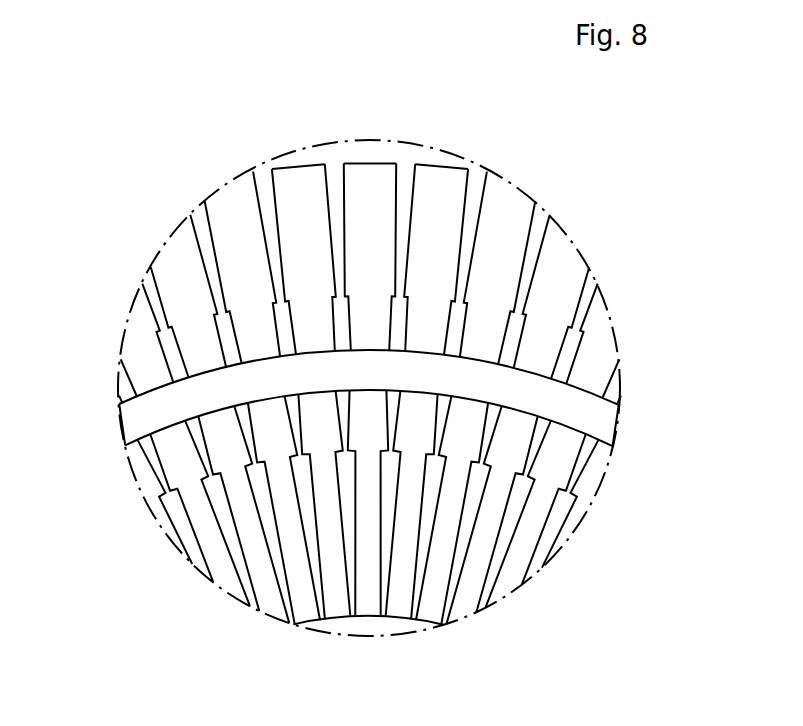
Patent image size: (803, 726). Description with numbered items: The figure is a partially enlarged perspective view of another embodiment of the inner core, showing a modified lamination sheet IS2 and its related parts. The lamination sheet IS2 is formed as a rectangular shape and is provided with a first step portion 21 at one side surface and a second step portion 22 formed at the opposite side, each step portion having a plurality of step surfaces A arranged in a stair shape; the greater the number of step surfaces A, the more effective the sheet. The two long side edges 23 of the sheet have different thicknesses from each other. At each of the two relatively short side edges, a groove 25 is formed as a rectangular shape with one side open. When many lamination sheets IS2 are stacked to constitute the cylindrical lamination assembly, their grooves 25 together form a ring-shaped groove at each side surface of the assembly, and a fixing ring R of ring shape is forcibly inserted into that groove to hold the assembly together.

The first step portion 21 is at (167, 121).
The second step portion 22 is at (578, 130).
The long side edges 23 is at (371, 163).
The groove 25 is at (423, 348).
The lamination sheet IS2 is at (460, 155).
The fixing ring R is at (128, 427).
The step surfaces A is at (272, 237).